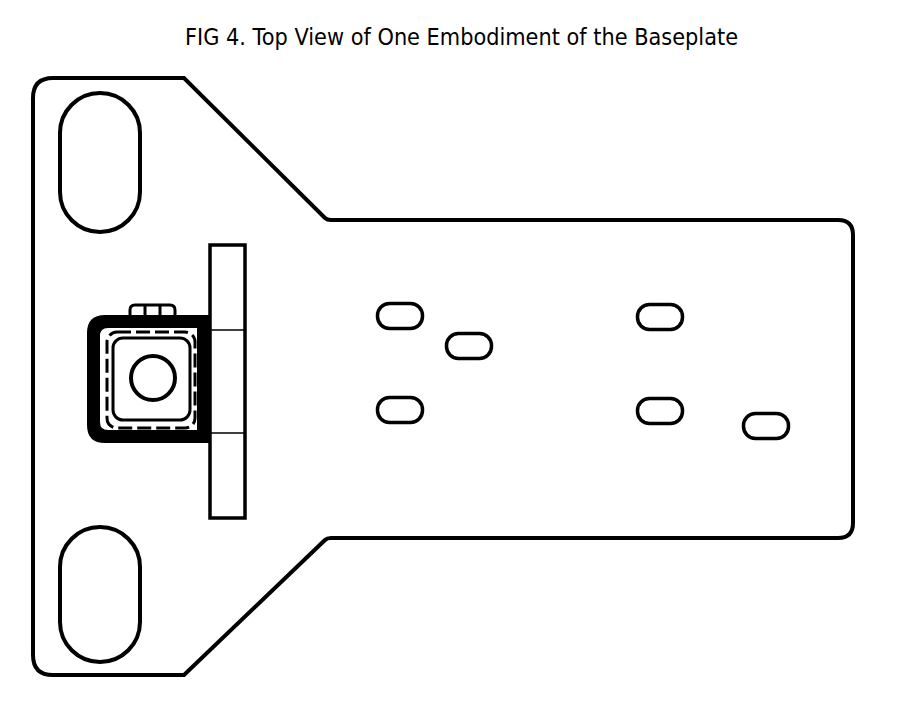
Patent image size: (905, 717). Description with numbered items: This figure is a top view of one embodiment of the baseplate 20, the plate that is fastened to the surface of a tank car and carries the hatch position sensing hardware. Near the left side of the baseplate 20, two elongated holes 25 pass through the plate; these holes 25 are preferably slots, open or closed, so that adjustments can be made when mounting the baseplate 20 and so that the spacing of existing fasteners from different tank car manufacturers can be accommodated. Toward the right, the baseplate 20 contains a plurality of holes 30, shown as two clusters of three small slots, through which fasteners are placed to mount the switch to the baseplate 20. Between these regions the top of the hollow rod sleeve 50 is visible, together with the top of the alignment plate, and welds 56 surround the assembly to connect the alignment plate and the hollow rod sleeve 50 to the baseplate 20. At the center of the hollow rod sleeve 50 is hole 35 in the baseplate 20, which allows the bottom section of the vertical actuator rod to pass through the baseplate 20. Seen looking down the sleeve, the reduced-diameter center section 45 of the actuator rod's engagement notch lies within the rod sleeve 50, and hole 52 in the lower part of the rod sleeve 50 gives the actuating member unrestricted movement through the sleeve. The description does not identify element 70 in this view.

The baseplate 20 is at (443, 376).
The holes 25 is at (100, 377).
The holes 30 is at (400, 408).
The hole 35 is at (153, 378).
The center section 45 is at (213, 437).
The hollow rod sleeve 50 is at (225, 413).
The hole 52 is at (197, 379).
The welds 56 is at (157, 442).
The clip 70 is at (152, 305).